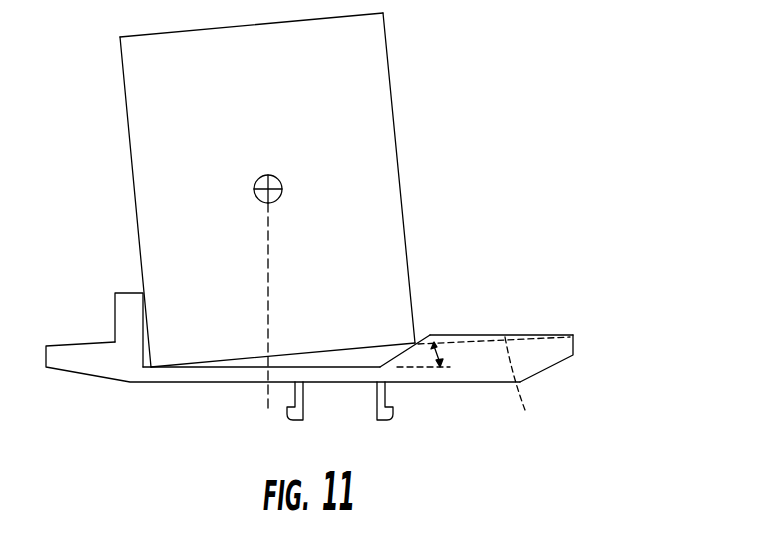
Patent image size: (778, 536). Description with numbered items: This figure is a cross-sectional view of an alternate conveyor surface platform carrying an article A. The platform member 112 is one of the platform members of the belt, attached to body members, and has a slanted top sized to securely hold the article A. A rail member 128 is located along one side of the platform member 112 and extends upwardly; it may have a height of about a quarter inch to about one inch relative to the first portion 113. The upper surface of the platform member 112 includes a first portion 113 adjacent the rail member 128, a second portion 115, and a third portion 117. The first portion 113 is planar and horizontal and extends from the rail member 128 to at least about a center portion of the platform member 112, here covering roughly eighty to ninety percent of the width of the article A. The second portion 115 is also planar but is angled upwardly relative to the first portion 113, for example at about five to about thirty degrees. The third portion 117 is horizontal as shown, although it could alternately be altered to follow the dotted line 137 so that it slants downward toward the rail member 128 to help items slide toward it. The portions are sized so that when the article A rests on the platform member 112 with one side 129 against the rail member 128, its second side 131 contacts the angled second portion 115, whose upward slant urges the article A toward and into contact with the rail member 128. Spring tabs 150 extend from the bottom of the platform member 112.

The article A is at (266, 210).
The platform member 112 is at (534, 351).
The first portion 113 is at (238, 368).
The second portion 115 is at (397, 355).
The third portion 117 is at (470, 337).
The rail member 128 is at (128, 302).
The one side 129 is at (137, 213).
The second side 131 is at (403, 217).
The dotted line 137 is at (524, 390).
The spring tabs 150 is at (377, 395).